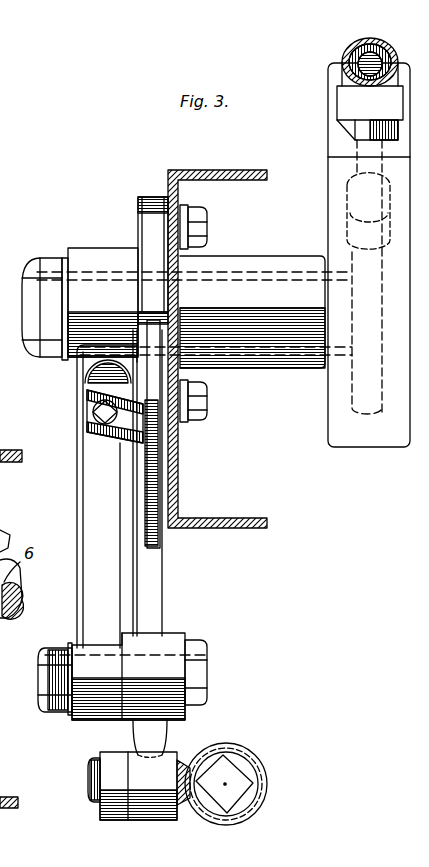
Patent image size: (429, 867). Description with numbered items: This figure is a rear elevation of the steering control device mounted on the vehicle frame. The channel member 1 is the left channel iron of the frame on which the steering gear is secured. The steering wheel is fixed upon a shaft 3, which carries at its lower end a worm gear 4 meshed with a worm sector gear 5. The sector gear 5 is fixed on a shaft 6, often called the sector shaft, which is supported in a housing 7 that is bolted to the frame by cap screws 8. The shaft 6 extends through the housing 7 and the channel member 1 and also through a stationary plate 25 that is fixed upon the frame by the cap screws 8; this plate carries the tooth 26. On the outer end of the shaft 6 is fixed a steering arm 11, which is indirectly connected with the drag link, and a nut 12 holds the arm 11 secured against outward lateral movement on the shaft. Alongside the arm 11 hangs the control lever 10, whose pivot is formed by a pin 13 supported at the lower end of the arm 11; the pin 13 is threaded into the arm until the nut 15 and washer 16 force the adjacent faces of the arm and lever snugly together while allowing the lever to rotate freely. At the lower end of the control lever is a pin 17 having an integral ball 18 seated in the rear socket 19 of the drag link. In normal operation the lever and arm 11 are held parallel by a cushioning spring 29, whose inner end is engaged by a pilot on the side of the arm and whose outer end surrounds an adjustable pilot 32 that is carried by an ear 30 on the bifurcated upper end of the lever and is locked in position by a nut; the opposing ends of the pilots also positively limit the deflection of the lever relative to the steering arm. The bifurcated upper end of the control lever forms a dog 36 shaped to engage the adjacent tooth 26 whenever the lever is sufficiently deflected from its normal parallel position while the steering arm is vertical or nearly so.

The channel member 1 is at (178, 470).
The shaft 3 is at (345, 52).
The worm gear 4 is at (347, 201).
The worm sector gear 5 is at (352, 252).
The shaft 6 is at (249, 280).
The housing 7 is at (284, 369).
The cap screws 8 is at (208, 222).
The arm 10 is at (155, 583).
The steering arm 11 is at (87, 491).
The nut 12 is at (43, 268).
The pin 13 is at (40, 668).
The nut 15 is at (205, 646).
The washer 16 is at (188, 640).
The pin 17 is at (90, 773).
The ball 18 is at (238, 754).
The rear socket 19 is at (266, 778).
The stationary plate 25 is at (138, 211).
The tooth 26 is at (137, 312).
The cushioning spring 29 is at (85, 384).
The clamp 30 is at (100, 433).
The adjustable pilot 32 is at (93, 413).
The dog 36 is at (160, 330).